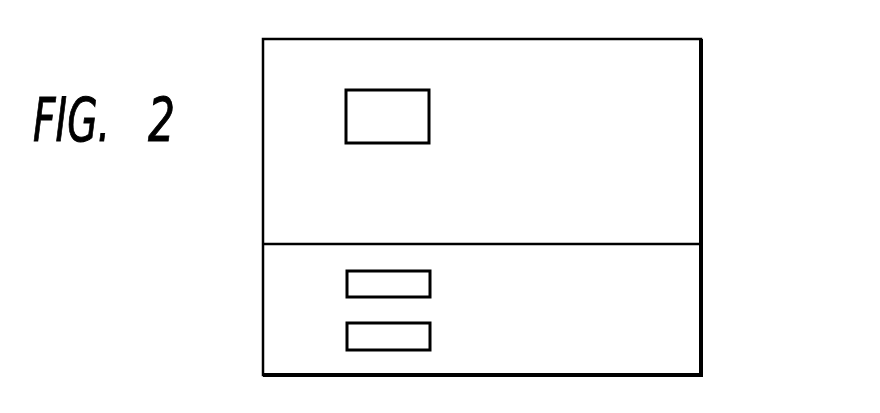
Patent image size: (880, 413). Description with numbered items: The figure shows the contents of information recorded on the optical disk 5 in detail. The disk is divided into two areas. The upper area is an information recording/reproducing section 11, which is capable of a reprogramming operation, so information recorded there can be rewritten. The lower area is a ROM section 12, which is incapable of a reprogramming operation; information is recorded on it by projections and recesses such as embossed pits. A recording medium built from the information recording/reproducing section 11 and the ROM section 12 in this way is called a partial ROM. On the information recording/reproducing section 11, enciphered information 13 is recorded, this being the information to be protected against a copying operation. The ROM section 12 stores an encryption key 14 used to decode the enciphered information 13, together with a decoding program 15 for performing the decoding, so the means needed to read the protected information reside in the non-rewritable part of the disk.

The optical disk 5 is at (578, 40).
The information recording/reproducing section 11 is at (720, 40).
The ROM section 12 is at (720, 373).
The enciphered information 13 is at (430, 113).
The encryption key 14 is at (430, 284).
The decoding program 15 is at (430, 340).